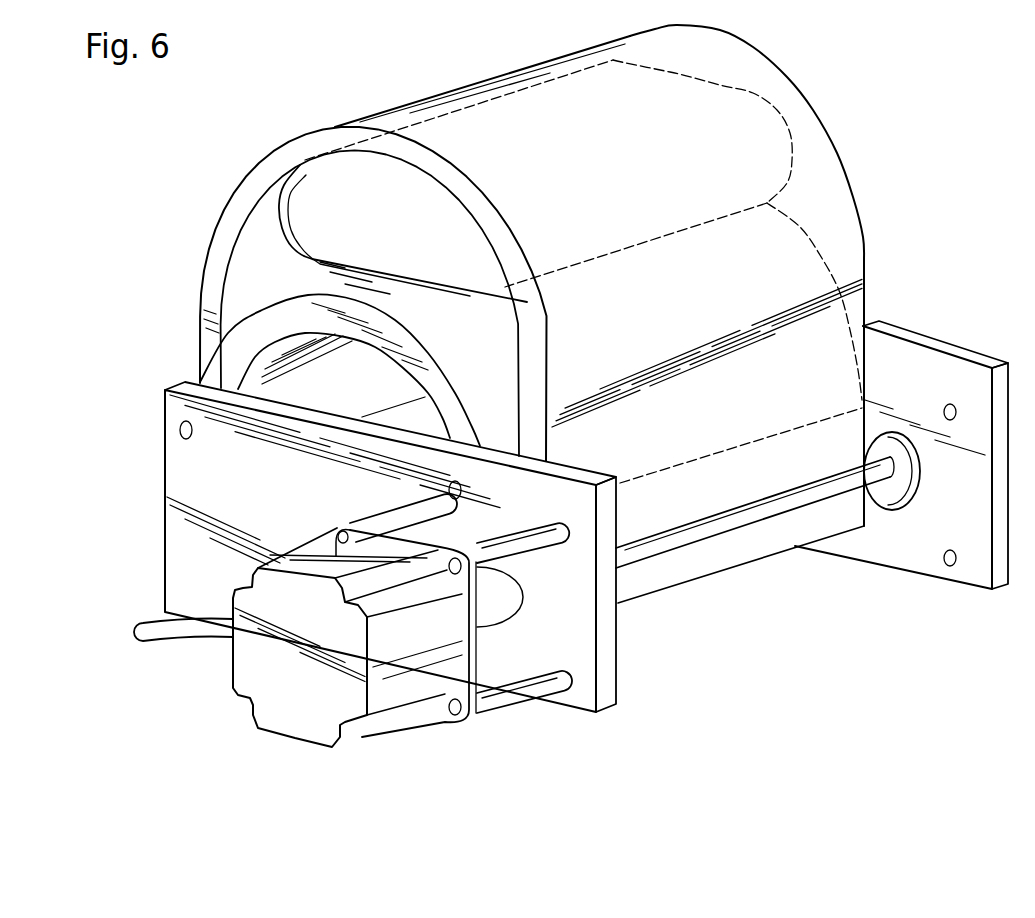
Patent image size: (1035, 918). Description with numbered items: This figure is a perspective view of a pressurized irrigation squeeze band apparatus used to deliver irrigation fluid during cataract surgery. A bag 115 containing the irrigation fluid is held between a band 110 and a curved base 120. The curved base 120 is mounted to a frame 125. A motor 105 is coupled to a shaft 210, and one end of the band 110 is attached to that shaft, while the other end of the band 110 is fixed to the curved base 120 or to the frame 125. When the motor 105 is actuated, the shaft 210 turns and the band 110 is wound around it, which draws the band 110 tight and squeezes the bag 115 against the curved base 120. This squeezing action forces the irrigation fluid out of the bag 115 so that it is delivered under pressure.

The motor 105 is at (245, 672).
The band 110 is at (228, 217).
The bag 115 is at (333, 175).
The curved base 120 is at (250, 323).
The frame 125 is at (908, 557).
The shaft 210 is at (683, 535).